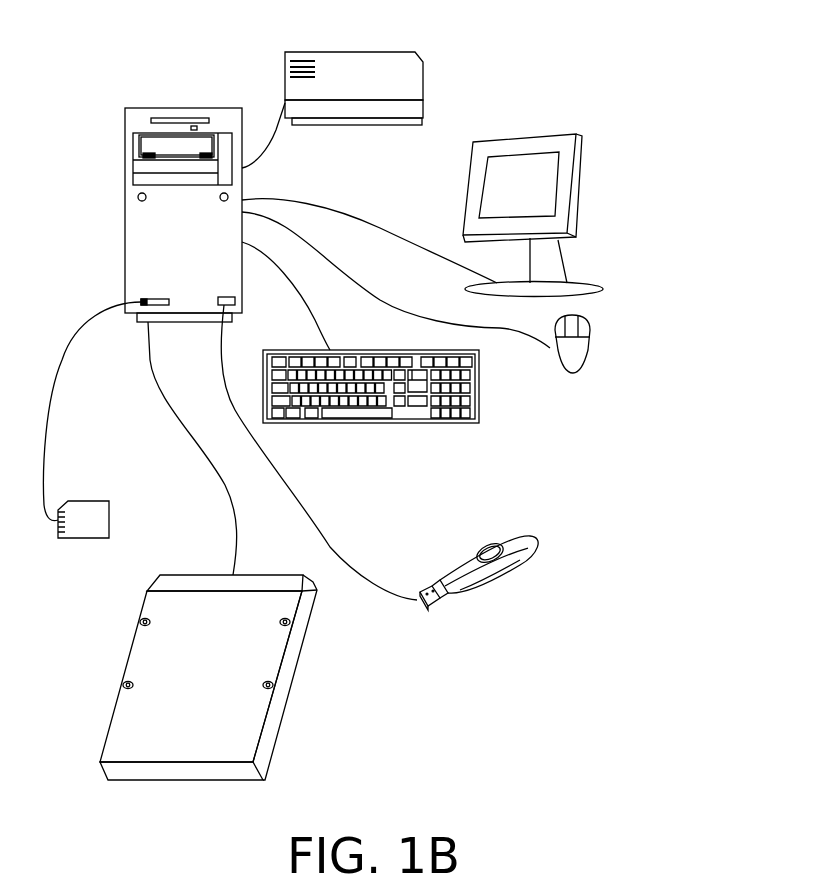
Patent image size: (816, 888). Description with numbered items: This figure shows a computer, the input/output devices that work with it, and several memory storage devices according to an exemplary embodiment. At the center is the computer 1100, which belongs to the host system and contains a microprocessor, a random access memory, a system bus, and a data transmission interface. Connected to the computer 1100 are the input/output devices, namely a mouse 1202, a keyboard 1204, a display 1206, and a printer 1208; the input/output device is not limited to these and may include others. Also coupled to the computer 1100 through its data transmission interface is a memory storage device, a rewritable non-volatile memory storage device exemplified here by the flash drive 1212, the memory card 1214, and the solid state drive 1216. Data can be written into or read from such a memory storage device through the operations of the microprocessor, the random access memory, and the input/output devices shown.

The computer 1100 is at (182, 108).
The mouse 1202 is at (590, 350).
The keyboard 1204 is at (480, 395).
The display 1206 is at (532, 133).
The printer 1208 is at (350, 52).
The flash drive 1212 is at (473, 555).
The memory card 1214 is at (110, 510).
The solid state drive (SSD) 1216 is at (266, 560).